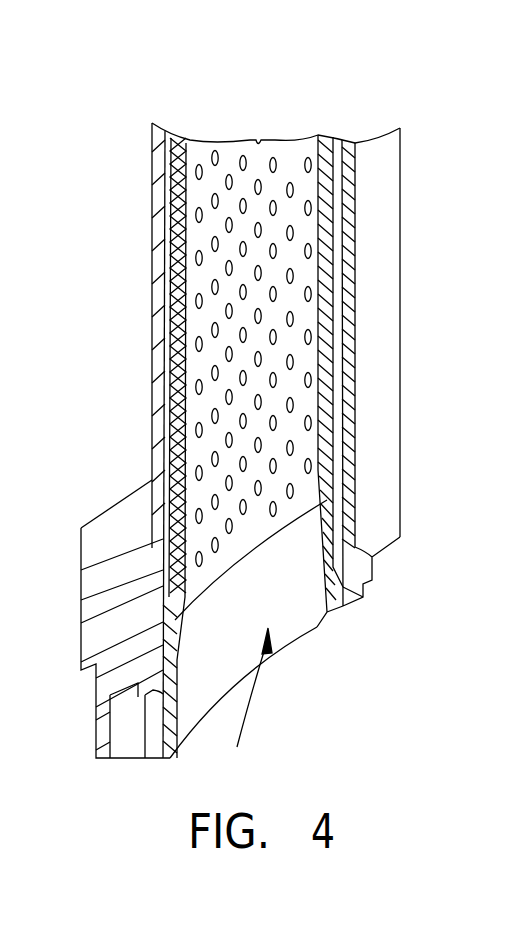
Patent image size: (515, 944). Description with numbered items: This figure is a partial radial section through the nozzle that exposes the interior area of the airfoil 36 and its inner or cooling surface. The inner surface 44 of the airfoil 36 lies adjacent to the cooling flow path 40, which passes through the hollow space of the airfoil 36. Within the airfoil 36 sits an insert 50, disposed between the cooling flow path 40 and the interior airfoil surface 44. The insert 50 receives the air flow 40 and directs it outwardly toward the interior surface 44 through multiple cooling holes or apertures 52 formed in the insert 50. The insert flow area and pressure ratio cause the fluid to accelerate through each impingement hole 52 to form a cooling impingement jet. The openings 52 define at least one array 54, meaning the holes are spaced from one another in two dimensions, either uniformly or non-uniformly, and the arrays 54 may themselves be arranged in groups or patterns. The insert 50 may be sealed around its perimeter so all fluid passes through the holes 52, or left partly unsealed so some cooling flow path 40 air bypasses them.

The airfoil 36 is at (283, 411).
The cooling flow path 40 is at (257, 700).
The inner surface 44 is at (357, 189).
The insert 50 is at (204, 341).
The cooling holes 52 is at (203, 433).
The array 54 is at (215, 270).